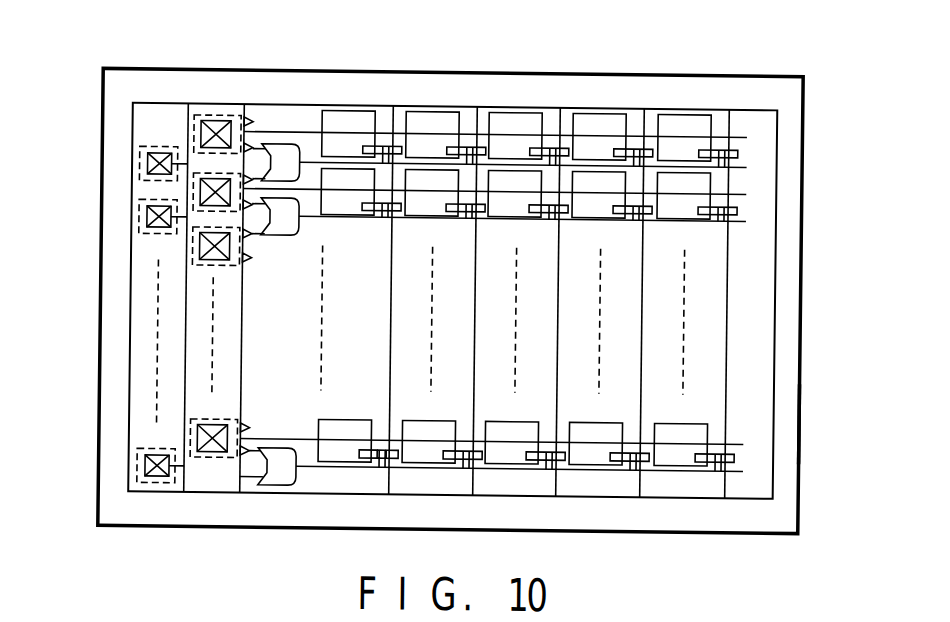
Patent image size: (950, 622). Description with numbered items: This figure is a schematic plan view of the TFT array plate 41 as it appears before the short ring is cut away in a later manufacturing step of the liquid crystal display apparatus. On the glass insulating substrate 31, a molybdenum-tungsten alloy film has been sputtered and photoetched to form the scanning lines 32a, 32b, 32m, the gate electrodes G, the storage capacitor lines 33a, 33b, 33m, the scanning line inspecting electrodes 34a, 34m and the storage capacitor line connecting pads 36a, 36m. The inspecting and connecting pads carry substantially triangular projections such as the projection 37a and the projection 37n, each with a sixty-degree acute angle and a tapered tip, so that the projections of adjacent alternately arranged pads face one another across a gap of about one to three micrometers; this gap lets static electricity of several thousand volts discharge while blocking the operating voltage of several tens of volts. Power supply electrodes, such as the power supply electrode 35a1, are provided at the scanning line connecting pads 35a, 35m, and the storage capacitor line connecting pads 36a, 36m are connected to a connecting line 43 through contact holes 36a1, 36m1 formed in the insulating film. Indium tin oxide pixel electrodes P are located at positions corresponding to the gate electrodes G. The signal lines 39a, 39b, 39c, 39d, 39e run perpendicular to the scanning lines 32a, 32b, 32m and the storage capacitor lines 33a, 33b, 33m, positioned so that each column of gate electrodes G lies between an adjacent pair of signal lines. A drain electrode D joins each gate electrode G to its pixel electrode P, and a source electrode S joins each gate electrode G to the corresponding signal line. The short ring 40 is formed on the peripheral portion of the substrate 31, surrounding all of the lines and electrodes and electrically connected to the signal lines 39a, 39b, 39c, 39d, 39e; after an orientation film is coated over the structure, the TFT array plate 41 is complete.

The glass insulating substrate 31 is at (770, 73).
The scanning line 32a is at (313, 123).
The scanning line 32b is at (745, 219).
The scanning line 32m is at (602, 469).
The storage capacitor line 33a is at (745, 134).
The storage capacitor line 33b is at (745, 191).
The storage capacitor line 33m is at (283, 441).
The scanning line inspecting electrode 34a is at (283, 147).
The scanning line inspecting electrode 34m is at (292, 483).
The scanning line connecting pad 35a is at (115, 132).
The power supply electrode 35a1 is at (158, 152).
The scanning line connecting pad 35m is at (157, 482).
The storage capacitor line connecting pad 36a is at (207, 137).
The contact hole 36a1 is at (214, 124).
The storage capacitor line connecting pad 36m is at (174, 401).
The contact hole 36m1 is at (215, 427).
The projection 37a is at (247, 110).
The control line 37n is at (265, 480).
The signal line 39a is at (394, 124).
The signal line 39b is at (477, 123).
The signal line 39c is at (553, 120).
The signal line 39d is at (637, 119).
The signal line 39e is at (723, 119).
The short ring 40 is at (517, 107).
The TFT array plate 41 is at (801, 417).
The connecting line 43 is at (215, 473).
The pixel electrode P is at (527, 303).
The drain electrode D is at (366, 459).
The gate electrode G is at (384, 462).
The source electrode S is at (399, 460).